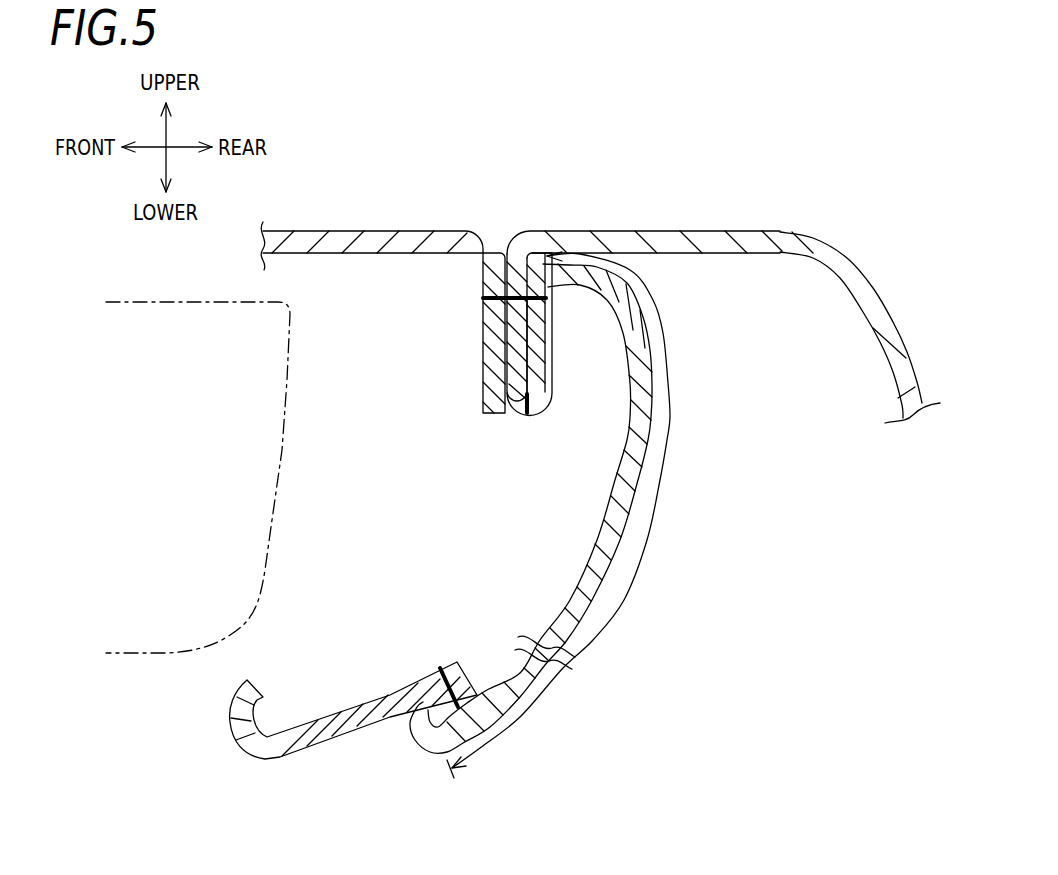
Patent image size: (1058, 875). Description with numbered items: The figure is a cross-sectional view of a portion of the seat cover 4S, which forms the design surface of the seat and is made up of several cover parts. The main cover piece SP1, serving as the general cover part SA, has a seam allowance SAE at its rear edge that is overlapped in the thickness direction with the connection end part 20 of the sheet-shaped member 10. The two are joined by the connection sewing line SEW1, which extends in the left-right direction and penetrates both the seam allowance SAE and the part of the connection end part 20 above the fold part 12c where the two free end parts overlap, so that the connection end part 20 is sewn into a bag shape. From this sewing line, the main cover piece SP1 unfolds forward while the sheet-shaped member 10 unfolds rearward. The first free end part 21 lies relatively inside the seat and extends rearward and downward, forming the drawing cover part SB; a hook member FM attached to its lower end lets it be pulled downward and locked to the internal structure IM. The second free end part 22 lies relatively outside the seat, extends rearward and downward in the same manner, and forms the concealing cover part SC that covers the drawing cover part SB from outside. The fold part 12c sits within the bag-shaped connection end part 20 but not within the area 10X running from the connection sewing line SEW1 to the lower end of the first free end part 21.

The main cover piece SP1 is at (383, 285).
The general cover part SA is at (302, 242).
The connection sewing line SEW1 is at (492, 227).
The sheet-shaped member 10 is at (723, 278).
The second free end part 22 is at (840, 290).
The concealing cover part SC is at (860, 327).
The seat cover 4S is at (883, 162).
The seam allowance SAE is at (497, 343).
The fold part 12c is at (522, 412).
The connection end part 20 is at (545, 395).
The area of the sheet-shaped member 10X is at (582, 515).
The first free end part 21 is at (531, 508).
The drawing cover part SB is at (600, 543).
The internal structure IM is at (158, 655).
The hook member FM is at (312, 743).